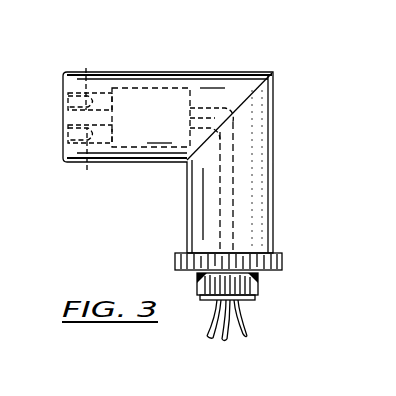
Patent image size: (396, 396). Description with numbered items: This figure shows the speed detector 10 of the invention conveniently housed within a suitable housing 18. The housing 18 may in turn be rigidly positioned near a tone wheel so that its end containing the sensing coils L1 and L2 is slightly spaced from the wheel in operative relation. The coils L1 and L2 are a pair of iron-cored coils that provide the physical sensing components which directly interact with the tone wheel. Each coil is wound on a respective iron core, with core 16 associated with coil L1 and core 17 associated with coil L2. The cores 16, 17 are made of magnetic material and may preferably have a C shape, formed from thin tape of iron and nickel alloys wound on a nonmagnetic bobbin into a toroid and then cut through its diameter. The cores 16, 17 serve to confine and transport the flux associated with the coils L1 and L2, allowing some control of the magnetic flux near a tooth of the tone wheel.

The speed detector 10 is at (183, 50).
The housing 18 is at (242, 72).
The iron core 16 is at (72, 94).
The iron core 17 is at (73, 141).
The iron-cored coil L1 is at (86, 68).
The iron-cored coil L2 is at (87, 170).